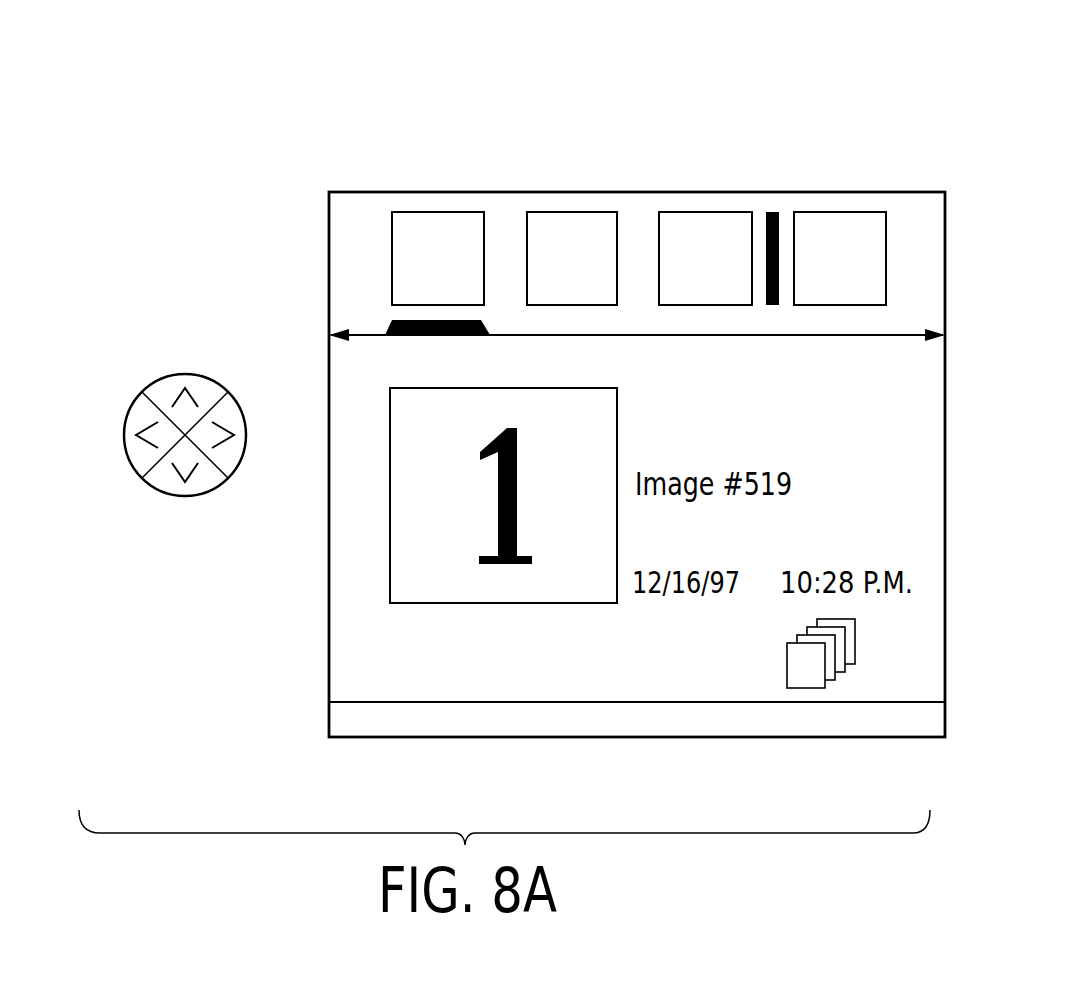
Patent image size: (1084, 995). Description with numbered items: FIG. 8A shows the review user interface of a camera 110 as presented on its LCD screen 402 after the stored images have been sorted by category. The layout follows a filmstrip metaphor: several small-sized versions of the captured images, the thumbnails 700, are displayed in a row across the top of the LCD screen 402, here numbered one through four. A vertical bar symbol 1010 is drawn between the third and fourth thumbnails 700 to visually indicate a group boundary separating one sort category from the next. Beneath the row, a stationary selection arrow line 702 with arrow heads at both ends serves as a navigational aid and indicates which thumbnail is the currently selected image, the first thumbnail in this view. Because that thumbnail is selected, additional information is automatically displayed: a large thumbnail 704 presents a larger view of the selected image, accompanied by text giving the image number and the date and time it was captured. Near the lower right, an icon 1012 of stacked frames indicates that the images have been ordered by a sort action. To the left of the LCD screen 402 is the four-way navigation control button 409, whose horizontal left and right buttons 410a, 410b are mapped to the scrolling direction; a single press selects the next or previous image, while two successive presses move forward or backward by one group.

The digital camera display screen 110 is at (543, 44).
The LCD screen 402 is at (718, 738).
The thumbnails 700 is at (845, 212).
The vertical bar symbol 1010 is at (773, 212).
The selection arrow line 702 is at (370, 338).
The large thumbnail 704 is at (405, 603).
The icon 1012 is at (807, 688).
The four-way navigation control button 409 is at (187, 408).
The left button 410a is at (128, 458).
The right button 410b is at (240, 458).